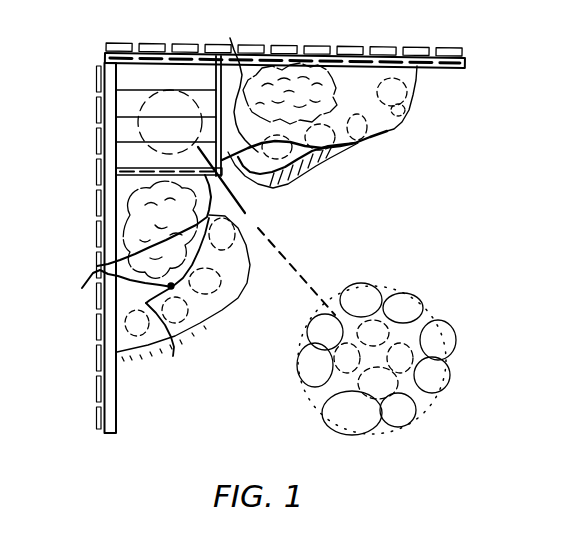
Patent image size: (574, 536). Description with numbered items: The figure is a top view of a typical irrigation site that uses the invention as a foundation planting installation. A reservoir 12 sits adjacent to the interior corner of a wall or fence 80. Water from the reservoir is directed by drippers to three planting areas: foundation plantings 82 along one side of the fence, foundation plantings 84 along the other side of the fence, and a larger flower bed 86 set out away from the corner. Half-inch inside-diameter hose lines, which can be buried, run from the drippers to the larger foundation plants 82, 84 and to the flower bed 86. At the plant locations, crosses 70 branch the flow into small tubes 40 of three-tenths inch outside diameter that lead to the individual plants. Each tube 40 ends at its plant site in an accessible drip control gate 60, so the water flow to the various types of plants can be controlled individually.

The reservoir 12 is at (137, 113).
The tube 40 is at (257, 182).
The drip control gate 60 is at (415, 104).
The cross 70 is at (205, 252).
The wall or fence 80 is at (285, 49).
The foundation plantings 82 is at (142, 224).
The foundation plantings 84 is at (331, 92).
The flower bed 86 is at (403, 335).